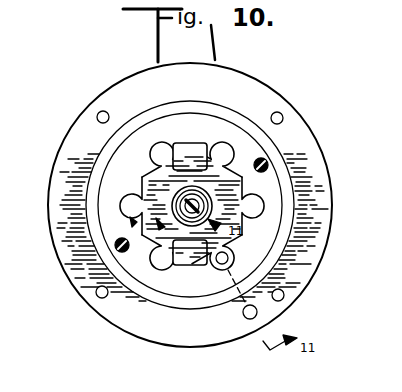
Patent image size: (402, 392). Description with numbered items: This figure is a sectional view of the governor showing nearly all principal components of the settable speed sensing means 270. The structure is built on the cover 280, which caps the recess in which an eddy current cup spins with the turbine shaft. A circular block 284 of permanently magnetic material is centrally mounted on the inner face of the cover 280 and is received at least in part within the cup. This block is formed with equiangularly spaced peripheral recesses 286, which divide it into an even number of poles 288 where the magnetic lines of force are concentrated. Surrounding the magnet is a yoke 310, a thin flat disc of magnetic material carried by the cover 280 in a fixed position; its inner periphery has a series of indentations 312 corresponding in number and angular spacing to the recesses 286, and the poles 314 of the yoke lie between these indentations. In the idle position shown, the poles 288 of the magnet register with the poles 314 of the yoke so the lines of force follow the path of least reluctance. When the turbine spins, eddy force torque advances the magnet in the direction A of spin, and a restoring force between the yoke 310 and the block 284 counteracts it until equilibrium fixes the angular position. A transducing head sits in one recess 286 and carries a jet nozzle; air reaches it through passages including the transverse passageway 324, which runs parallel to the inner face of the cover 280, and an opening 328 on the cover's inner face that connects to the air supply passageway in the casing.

The settable speed sensing means 270 is at (108, 250).
The cover 280 is at (303, 155).
The circular block 284 is at (142, 218).
The peripheral recesses 286 is at (205, 143).
The poles 288 is at (212, 190).
The yoke 310 is at (262, 187).
The indentations 312 is at (229, 140).
The poles of the yoke 314 is at (265, 228).
The transverse passageway 324 is at (234, 280).
The opening 328 is at (246, 320).
The direction of spin A is at (141, 190).